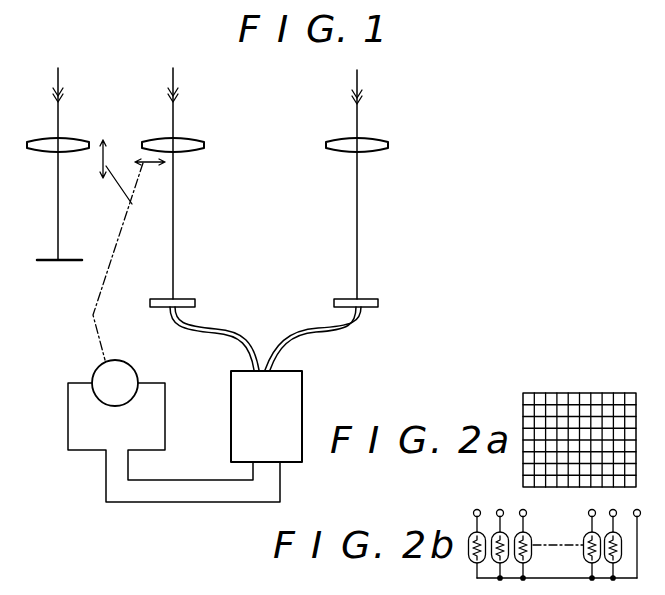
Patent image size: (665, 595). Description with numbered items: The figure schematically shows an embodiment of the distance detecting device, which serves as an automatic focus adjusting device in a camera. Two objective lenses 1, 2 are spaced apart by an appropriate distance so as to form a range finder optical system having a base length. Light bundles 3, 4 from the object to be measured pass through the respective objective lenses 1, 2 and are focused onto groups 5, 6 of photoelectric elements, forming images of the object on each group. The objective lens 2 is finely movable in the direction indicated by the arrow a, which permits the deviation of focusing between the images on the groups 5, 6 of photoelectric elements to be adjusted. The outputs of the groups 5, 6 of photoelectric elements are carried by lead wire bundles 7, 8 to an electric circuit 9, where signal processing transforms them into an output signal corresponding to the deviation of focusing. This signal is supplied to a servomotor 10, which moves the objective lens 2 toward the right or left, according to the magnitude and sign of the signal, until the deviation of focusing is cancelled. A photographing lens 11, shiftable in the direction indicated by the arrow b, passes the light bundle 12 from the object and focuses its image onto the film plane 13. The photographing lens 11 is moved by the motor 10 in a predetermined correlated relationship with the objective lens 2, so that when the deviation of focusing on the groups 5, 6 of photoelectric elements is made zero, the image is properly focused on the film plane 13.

The objective lens 1 is at (372, 138).
The objective lens 2 is at (190, 137).
The light bundle 3 is at (359, 84).
The light bundle 4 is at (175, 82).
The group of photoelectric elements 5 is at (376, 297).
The group of photoelectric elements 6 is at (192, 297).
The lead wire bundle 7 is at (322, 330).
The lead wire bundle 8 is at (232, 330).
The electric circuit 9 is at (266, 416).
The servomotor 10 is at (138, 372).
The photographing lens 11 is at (74, 137).
The light bundle 12 is at (60, 82).
The film plane 13 is at (46, 258).
The arrow a is at (153, 166).
The arrow b is at (102, 168).